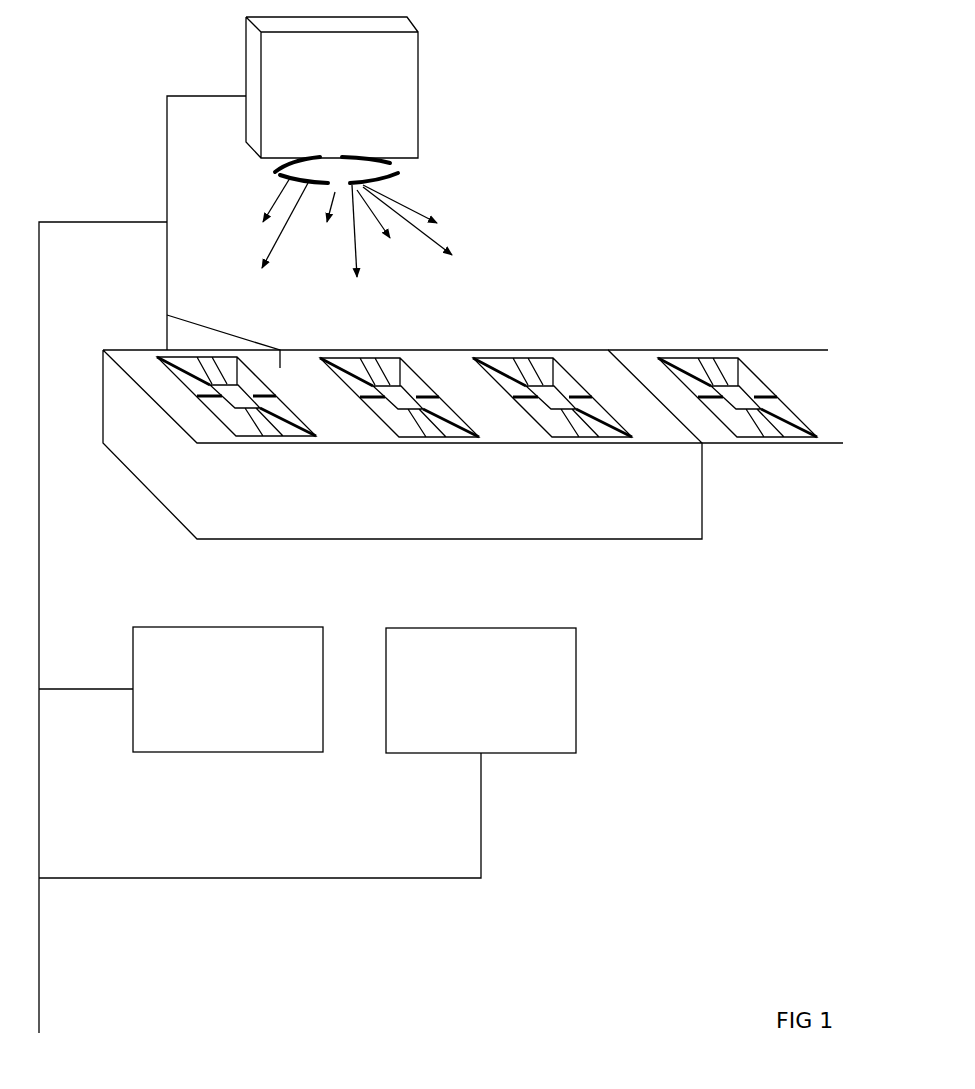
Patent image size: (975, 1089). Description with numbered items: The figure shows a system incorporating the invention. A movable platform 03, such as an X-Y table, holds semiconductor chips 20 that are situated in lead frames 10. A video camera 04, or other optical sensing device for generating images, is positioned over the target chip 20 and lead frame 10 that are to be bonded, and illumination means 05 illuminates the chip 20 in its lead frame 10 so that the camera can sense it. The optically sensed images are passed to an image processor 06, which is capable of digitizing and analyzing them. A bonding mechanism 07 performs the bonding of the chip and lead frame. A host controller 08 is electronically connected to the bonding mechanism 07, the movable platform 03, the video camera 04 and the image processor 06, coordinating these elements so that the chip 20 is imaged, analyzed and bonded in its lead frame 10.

The movable platform 03 is at (603, 539).
The video camera 04 is at (418, 97).
The illumination means 05 is at (404, 175).
The image processor 06 is at (165, 752).
The bonding mechanism 07 is at (243, 336).
The host controller 08 is at (576, 690).
The lead frame 10 is at (810, 350).
The semiconductor chip 20 is at (413, 368).